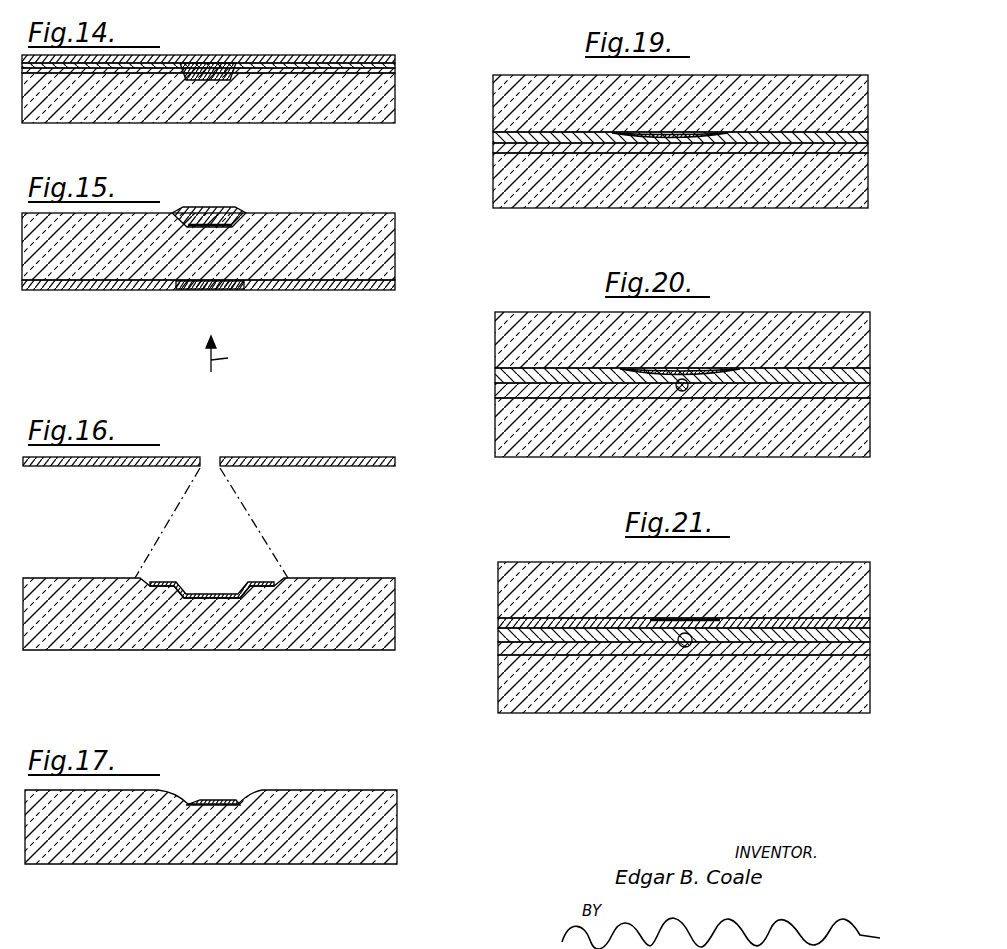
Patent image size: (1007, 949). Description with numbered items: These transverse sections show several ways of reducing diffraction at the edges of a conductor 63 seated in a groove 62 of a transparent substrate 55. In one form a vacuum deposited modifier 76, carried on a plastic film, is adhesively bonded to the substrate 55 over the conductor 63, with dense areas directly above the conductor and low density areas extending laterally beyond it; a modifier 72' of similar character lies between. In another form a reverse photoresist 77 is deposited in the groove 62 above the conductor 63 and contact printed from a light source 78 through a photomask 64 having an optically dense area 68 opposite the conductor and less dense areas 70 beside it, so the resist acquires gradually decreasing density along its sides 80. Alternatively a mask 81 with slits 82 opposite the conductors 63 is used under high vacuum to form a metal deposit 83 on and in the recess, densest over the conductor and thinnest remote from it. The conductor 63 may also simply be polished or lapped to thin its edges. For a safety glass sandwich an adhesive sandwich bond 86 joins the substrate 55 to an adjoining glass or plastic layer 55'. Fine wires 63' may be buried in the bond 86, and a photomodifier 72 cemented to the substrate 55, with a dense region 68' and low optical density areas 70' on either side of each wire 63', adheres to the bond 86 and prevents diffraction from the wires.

In FIG. 14, the substrate 55 is at (208, 109).
In FIG. 15, the substrate 55 is at (208, 230).
In FIG. 16, the substrate 55 is at (209, 633).
In FIG. 17, the substrate 55 is at (211, 845).
In FIG. 19, the substrate 55 is at (680, 85).
In FIG. 20, the substrate 55 is at (682, 321).
In FIG. 21, the substrate 55 is at (684, 571).
In FIG. 19, the adjoining glass or plastic layer 55' is at (680, 197).
In FIG. 20, the adjoining glass or plastic layer 55' is at (682, 444).
In FIG. 21, the adjoining glass or plastic layer 55' is at (684, 698).
In FIG. 15, the groove 62 is at (176, 242).
In FIG. 17, the groove 62 is at (210, 810).
In FIG. 14, the conductor 63 is at (208, 89).
In FIG. 15, the conductor 63 is at (210, 246).
In FIG. 16, the conductor 63 is at (202, 619).
In FIG. 17, the conductor 63 is at (214, 780).
In FIG. 19, the conductor 63 is at (670, 116).
In FIG. 20, the wire 63' is at (690, 383).
In FIG. 21, the wire 63' is at (703, 658).
In FIG. 15, the photomask 64 is at (356, 291).
In FIG. 15, the optically dense area 68 is at (210, 306).
In FIG. 21, the heated spot 68' is at (685, 599).
In FIG. 15, the less optically dense areas 70 is at (207, 306).
In FIG. 21, the areas of low optical density 70' is at (683, 601).
In FIG. 21, the photomodifier 72 is at (684, 606).
In FIG. 14, the intermediate layer 72' is at (230, 67).
In FIG. 14, the vacuum deposited modifier 76 is at (325, 58).
In FIG. 15, the reverse photoresist 77 is at (212, 207).
In FIG. 15, the light source 78 is at (231, 354).
In FIG. 15, the sides 80 is at (185, 228).
In FIG. 16, the mask 81 is at (340, 467).
In FIG. 16, the slits 82 is at (209, 462).
In FIG. 16, the deposit 83 is at (197, 580).
In FIG. 19, the adhesive sandwich bond 86 is at (770, 153).
In FIG. 20, the adhesive sandwich bond 86 is at (815, 399).
In FIG. 21, the adhesive sandwich bond 86 is at (826, 650).